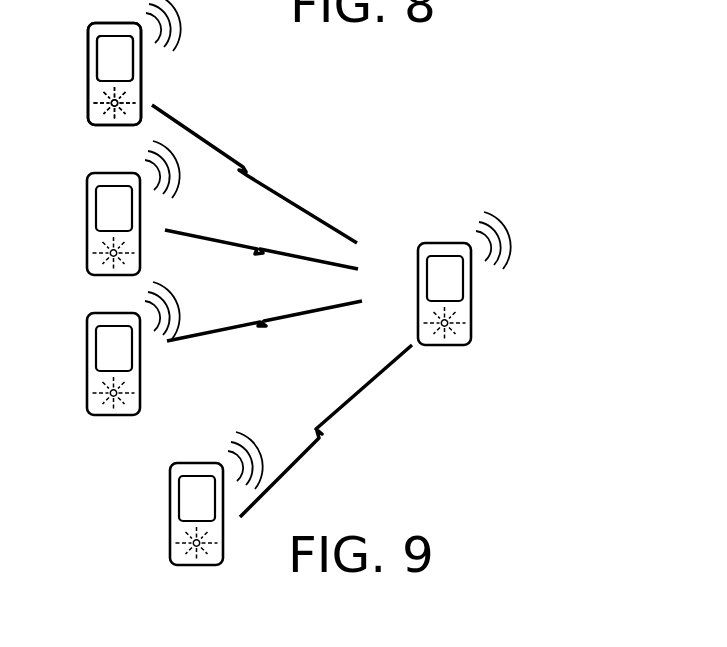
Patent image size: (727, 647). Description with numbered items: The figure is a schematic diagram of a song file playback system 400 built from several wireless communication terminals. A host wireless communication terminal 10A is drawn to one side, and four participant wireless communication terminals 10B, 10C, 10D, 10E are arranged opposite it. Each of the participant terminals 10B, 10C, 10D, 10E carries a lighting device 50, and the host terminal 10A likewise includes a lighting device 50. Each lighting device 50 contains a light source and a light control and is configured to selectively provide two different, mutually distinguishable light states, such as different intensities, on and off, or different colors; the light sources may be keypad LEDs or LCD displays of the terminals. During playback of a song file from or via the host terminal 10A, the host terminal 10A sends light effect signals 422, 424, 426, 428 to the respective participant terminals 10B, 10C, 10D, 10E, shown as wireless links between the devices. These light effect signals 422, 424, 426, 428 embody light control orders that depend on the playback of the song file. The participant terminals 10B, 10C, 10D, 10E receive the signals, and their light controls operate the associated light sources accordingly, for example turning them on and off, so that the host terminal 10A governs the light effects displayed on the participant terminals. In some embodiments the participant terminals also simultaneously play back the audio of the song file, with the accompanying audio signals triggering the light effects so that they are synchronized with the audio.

The song file playback system 400 is at (466, 140).
The host wireless communication terminal 10A is at (426, 243).
The participant wireless communication terminal 10B is at (95, 23).
The participant wireless communication terminal 10C is at (95, 173).
The participant wireless communication terminal 10D is at (95, 313).
The participant wireless communication terminal 10E is at (178, 463).
The lighting device 50 is at (111, 101).
The light effect signal 422 is at (195, 128).
The light effect signal 424 is at (185, 232).
The light effect signal 426 is at (325, 310).
The light effect signal 428 is at (325, 418).